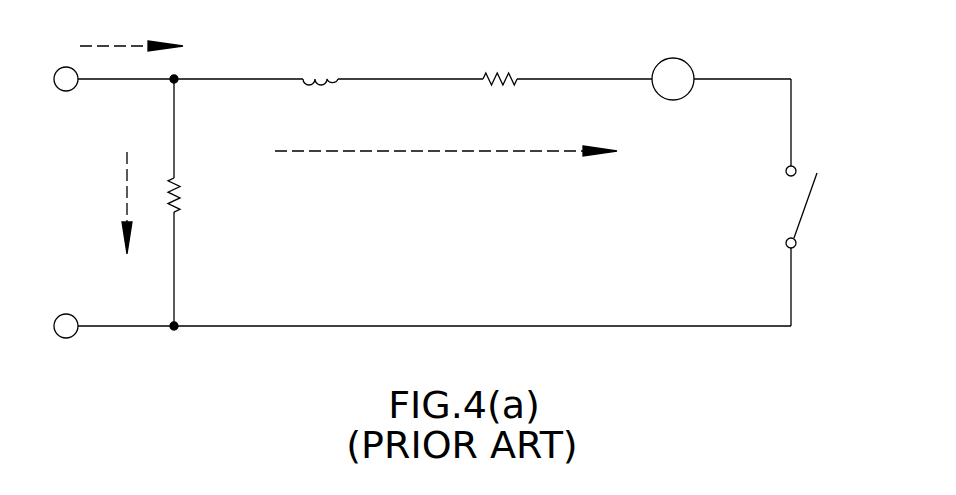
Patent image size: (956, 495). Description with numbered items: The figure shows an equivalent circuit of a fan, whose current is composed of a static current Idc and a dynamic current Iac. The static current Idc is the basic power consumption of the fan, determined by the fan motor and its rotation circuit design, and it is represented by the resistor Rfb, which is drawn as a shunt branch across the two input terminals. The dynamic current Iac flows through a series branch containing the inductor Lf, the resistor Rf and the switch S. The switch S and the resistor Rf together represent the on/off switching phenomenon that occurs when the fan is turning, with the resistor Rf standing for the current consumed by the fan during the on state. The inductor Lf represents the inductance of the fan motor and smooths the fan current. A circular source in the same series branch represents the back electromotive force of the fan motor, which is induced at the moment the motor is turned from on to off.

The inductor Lf is at (320, 59).
The resistor Rf is at (500, 59).
The switch S is at (807, 211).
The resistor Rfb is at (202, 200).
The static current Idc is at (106, 203).
The dynamic current Iac is at (348, 126).